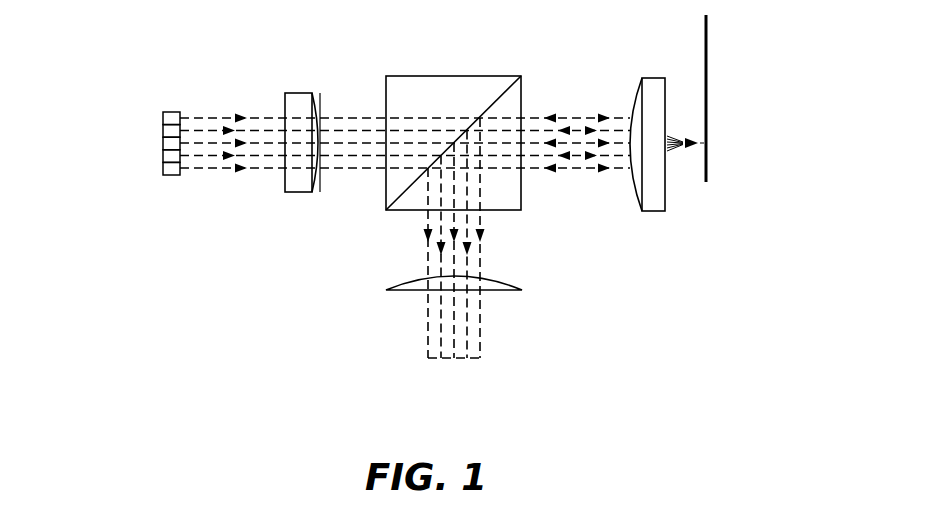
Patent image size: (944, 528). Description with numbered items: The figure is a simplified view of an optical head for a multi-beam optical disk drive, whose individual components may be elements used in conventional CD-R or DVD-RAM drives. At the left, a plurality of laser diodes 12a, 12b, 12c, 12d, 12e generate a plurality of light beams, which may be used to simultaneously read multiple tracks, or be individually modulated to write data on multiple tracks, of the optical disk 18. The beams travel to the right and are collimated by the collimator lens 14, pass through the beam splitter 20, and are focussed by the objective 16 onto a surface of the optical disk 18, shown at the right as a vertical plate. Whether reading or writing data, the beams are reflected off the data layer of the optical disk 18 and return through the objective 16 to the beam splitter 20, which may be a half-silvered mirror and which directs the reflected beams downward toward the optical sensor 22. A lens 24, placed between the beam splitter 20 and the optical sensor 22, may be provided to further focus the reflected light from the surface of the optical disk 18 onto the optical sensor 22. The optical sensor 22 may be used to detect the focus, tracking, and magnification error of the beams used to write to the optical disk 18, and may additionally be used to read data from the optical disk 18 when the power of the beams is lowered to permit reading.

The laser diode 12a is at (163, 118).
The laser diode 12b is at (163, 130).
The laser diode 12c is at (163, 143).
The laser diode 12d is at (163, 156).
The laser diode 12e is at (163, 168).
The collimator lens 14 is at (297, 192).
The objective 16 is at (652, 211).
The optical disk 18 is at (708, 182).
The beam splitter 20 is at (430, 76).
The optical sensor 22 is at (428, 360).
The lens 24 is at (386, 290).